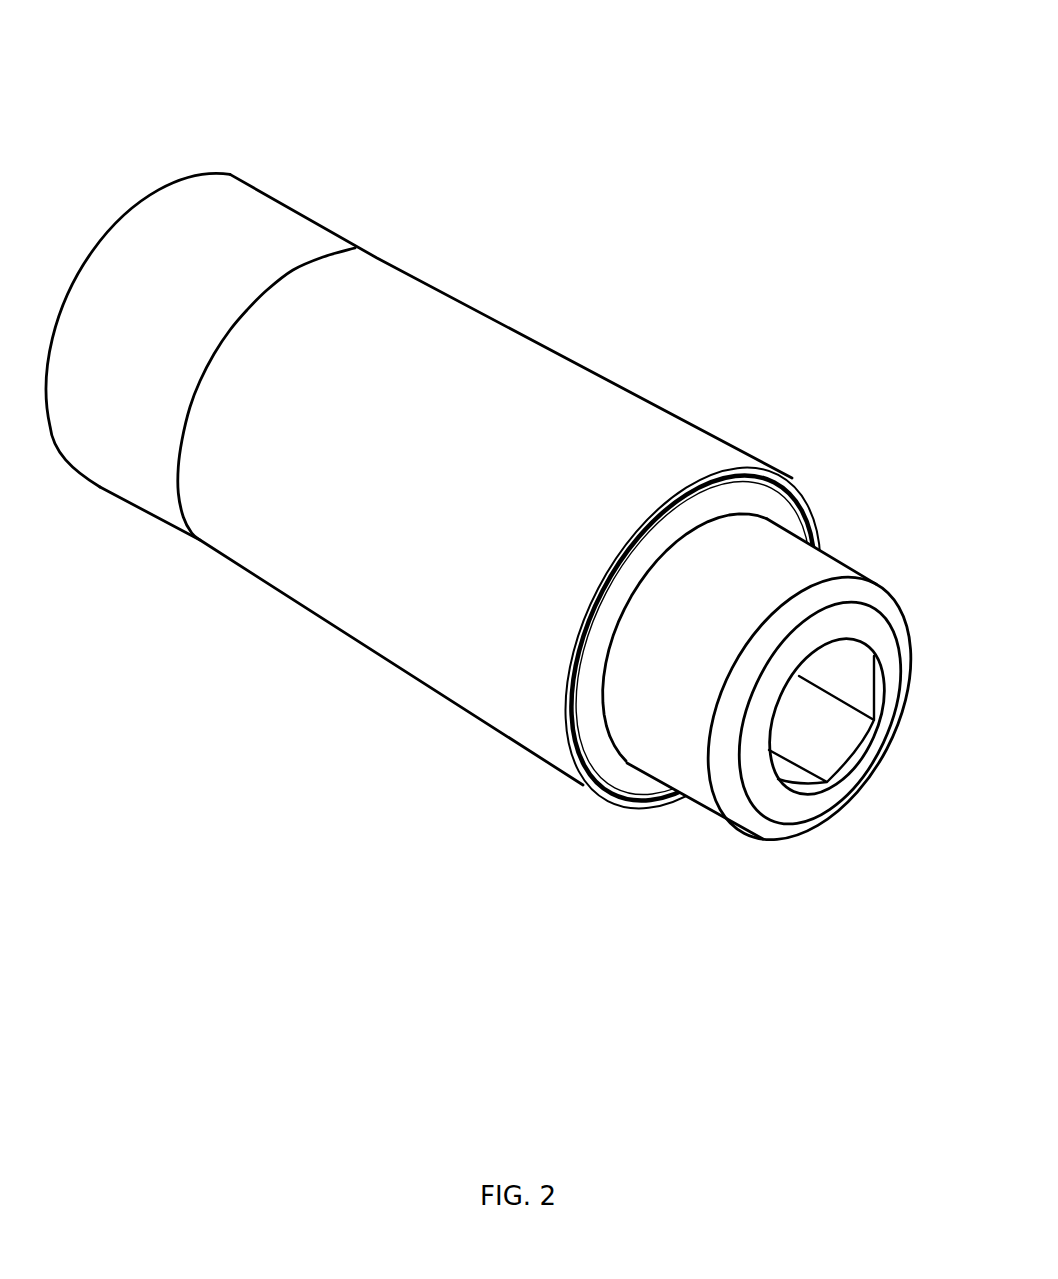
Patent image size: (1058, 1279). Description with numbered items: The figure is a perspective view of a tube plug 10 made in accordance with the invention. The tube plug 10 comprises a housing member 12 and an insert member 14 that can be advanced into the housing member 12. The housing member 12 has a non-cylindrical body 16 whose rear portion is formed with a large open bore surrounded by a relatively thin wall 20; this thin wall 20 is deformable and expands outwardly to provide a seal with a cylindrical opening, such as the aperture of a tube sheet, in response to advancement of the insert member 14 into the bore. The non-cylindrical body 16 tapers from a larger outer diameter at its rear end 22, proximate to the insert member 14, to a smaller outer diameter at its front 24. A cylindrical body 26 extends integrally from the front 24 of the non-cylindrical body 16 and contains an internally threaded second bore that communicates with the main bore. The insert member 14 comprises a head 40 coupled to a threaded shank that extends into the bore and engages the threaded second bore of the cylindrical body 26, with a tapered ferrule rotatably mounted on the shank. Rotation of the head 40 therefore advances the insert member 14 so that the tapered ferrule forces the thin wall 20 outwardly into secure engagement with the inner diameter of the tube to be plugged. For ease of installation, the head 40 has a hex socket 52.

The tube plug 10 is at (505, 444).
The housing member 12 is at (419, 479).
The insert member 14 is at (738, 647).
The non-cylindrical body 16 is at (394, 669).
The thin wall 20 is at (795, 482).
The rear end 22 is at (693, 642).
The front 24 is at (199, 547).
The cylindrical body 26 is at (113, 495).
The head 40 is at (700, 815).
The hex socket 52 is at (842, 686).